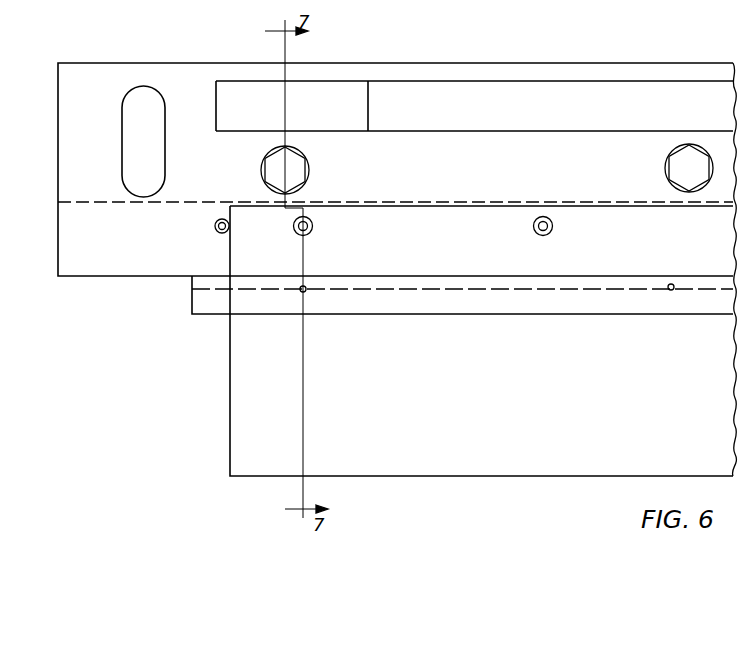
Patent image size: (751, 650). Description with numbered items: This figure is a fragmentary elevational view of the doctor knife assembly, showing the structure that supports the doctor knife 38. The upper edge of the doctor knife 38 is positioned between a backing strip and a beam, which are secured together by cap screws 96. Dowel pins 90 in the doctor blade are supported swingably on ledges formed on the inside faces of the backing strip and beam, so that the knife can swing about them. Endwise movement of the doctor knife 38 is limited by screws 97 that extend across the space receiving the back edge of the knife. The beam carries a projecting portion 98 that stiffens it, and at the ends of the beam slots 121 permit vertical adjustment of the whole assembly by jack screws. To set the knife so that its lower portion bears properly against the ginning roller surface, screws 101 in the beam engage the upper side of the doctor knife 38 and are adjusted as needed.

The slot 121 is at (145, 86).
The projecting portion 98 is at (420, 81).
The cap screw 96 is at (309, 167).
The doctor knife 38 is at (230, 387).
The screw 97 is at (216, 232).
The screw 101 is at (311, 232).
The dowel pin 90 is at (301, 285).